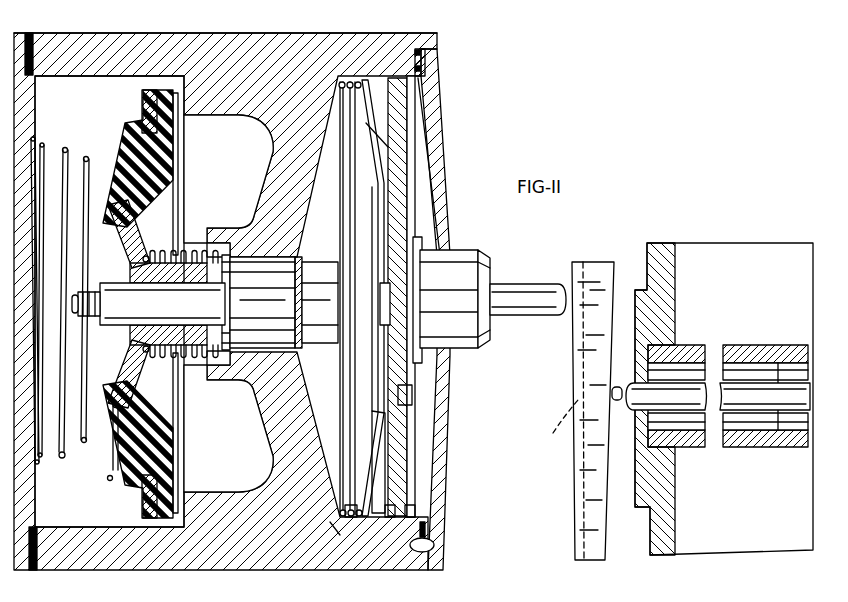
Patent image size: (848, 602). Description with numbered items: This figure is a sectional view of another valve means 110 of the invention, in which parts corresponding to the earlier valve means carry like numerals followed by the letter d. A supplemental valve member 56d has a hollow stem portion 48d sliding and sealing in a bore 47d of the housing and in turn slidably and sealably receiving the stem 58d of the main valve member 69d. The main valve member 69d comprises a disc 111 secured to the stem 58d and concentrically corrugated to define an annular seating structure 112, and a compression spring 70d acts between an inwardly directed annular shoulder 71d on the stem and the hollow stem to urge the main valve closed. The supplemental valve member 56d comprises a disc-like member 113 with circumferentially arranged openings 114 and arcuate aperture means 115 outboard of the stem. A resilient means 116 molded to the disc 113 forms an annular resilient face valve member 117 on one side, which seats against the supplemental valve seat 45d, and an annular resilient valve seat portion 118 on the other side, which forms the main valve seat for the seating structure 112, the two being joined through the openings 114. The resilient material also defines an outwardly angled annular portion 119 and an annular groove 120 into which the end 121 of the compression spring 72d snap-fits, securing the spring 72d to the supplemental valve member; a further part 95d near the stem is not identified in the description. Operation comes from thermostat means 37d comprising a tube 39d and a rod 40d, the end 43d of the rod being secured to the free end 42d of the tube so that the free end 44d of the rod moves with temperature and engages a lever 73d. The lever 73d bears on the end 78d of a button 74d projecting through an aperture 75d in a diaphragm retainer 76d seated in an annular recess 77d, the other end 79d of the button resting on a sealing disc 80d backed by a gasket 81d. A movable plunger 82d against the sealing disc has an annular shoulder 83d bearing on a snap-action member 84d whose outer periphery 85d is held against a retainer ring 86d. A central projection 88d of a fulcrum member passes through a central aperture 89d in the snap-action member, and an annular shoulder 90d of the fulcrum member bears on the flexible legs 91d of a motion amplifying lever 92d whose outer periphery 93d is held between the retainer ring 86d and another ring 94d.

The valve means 110 is at (448, 46).
The supplemental valve member 56d is at (225, 301).
The diaphragm retainer 76d is at (443, 108).
The annular recess 77d is at (428, 60).
The sealing disc 80d is at (410, 147).
The supplemental valve seat 45d is at (180, 110).
The annular resilient face valve member 117 is at (175, 125).
The openings 114 is at (177, 415).
The resilient means 116 is at (180, 157).
The disc-like member 113 is at (173, 205).
The arcuate aperture means 115 is at (165, 235).
The hollow valve stem 48d is at (228, 179).
The compression spring 70d is at (200, 388).
The bore 47d is at (262, 252).
The valve stem 58d is at (248, 345).
The sleeve 95d is at (298, 292).
The inwardly directed annular shoulder 71d is at (292, 319).
The disc 111 is at (205, 307).
The resilient valve seat portion 118 is at (100, 307).
The main valve member 69d is at (50, 196).
The annular seating structure 112 is at (85, 158).
The outwardly angled annular portion 119 is at (105, 176).
The compression spring 72d is at (63, 463).
The annular groove 120 is at (108, 477).
The end of compression spring 121 is at (113, 470).
The ring 94d is at (340, 142).
The flexible legs 91d is at (350, 162).
The motion amplifying lever 92d is at (340, 517).
The central projection 88d is at (392, 306).
The central aperture 89d is at (398, 288).
The movable plunger 82d is at (398, 432).
The snap-action member 84d is at (376, 455).
The annular shoulder 90d is at (410, 395).
The other end of button 79d is at (422, 360).
The aperture 75d is at (452, 252).
The button 74d is at (486, 270).
The end of button 78d is at (556, 284).
The lever 73d is at (575, 463).
The free end of rod 44d is at (572, 423).
The thermostat means 37d is at (740, 237).
The rod 40d is at (735, 385).
The free end of tube 42d is at (787, 347).
The tube 39d is at (733, 447).
The end of rod 43d is at (793, 430).
The gasket 81d is at (436, 546).
The annular shoulder 83d is at (400, 523).
The outer periphery 85d is at (390, 527).
The retainer ring 86d is at (346, 522).
The outer periphery 93d is at (336, 533).